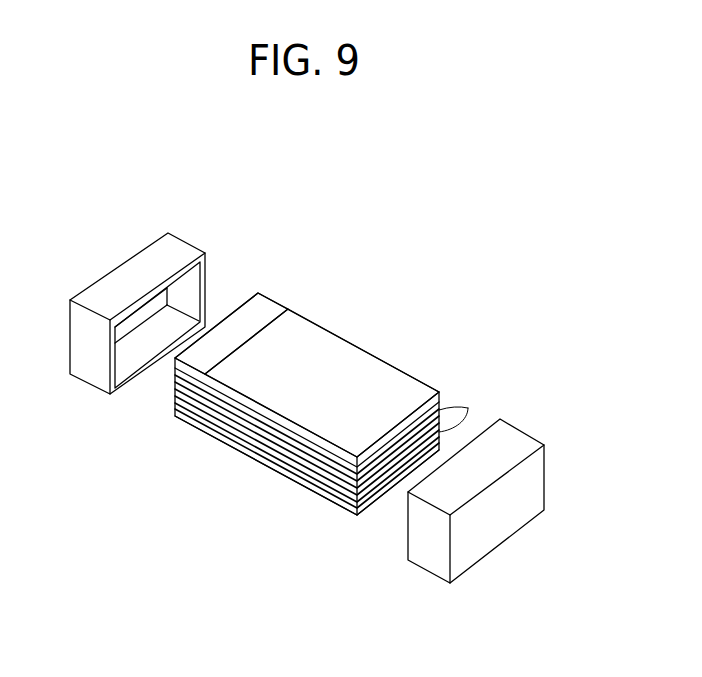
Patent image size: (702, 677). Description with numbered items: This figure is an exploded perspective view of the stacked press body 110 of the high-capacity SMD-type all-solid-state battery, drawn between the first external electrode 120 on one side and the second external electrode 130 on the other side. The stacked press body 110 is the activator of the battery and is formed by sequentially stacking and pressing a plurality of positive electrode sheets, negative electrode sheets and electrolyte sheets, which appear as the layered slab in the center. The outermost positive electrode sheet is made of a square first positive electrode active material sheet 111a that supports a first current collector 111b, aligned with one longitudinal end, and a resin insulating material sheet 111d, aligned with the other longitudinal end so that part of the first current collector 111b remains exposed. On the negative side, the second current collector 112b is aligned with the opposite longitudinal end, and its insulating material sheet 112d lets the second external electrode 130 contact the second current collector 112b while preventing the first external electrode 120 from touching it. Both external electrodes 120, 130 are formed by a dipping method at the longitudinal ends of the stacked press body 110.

The stacked press body 110 is at (349, 392).
The first positive electrode active material sheet 111a is at (280, 307).
The first current collector 111b is at (237, 304).
The insulating material sheet 111d is at (338, 348).
The second current collector 112b is at (468, 408).
The insulating material sheet 112d is at (307, 492).
The first external electrode 120 is at (163, 245).
The second external electrode 130 is at (512, 438).